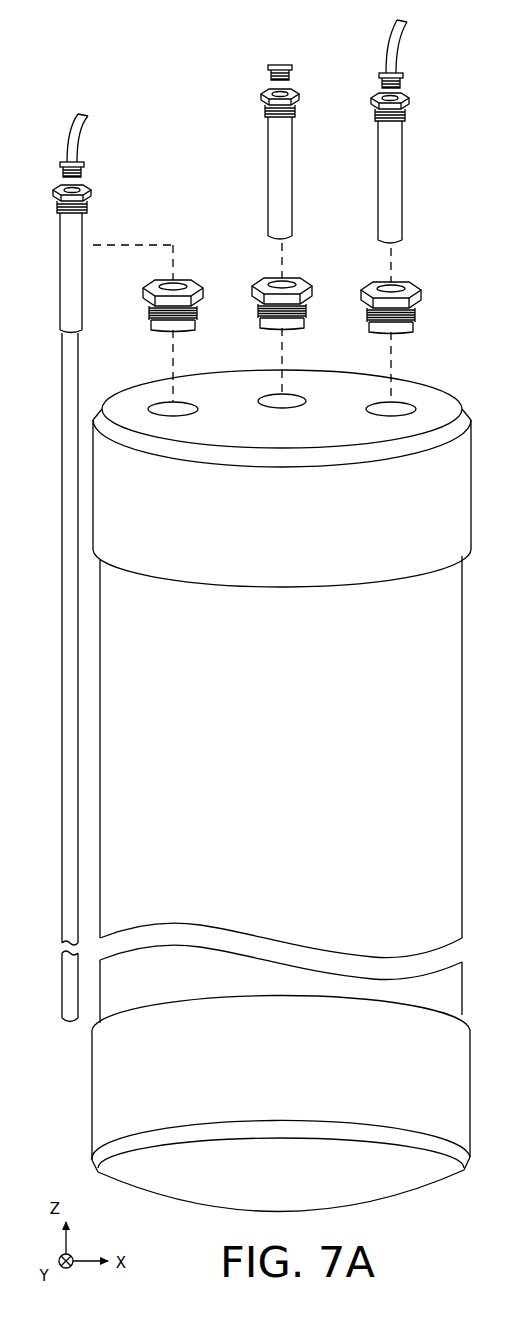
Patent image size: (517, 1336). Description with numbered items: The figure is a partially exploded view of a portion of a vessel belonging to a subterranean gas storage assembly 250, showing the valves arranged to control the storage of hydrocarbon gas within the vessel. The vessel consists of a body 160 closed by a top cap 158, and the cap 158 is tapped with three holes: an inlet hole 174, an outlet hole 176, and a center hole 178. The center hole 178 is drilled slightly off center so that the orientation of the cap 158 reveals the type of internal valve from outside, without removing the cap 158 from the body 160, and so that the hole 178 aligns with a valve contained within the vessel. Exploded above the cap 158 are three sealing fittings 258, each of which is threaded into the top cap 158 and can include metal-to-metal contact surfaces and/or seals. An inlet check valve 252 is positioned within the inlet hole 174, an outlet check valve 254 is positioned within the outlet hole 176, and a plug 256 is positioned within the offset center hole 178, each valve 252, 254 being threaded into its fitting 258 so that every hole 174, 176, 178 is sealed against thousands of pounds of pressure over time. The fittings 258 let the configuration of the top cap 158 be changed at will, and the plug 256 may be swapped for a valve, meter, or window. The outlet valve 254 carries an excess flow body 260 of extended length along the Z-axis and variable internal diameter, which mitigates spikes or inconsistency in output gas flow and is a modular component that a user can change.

The subterranean gas storage assembly 250 is at (120, 47).
The cap 158 is at (266, 566).
The body 160 is at (264, 899).
The inlet hole 174 is at (397, 418).
The outlet hole 176 is at (164, 418).
The center hole 178 is at (282, 415).
The inlet check valve 252 is at (417, 124).
The outlet check valve 254 is at (110, 176).
The plug 256 is at (247, 89).
The sealing fitting 258 is at (202, 278).
The excess flow body 260 is at (80, 652).